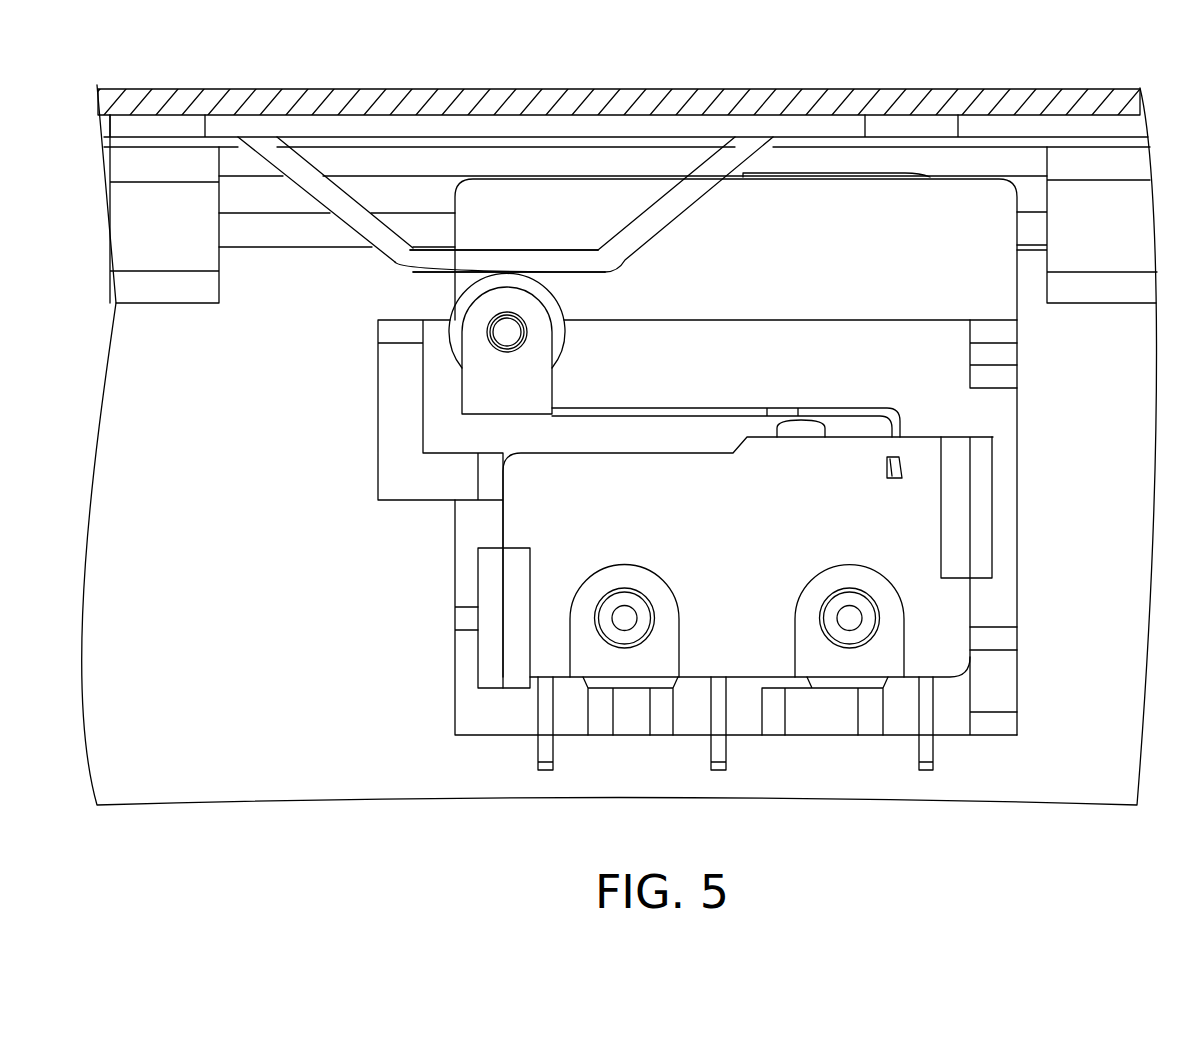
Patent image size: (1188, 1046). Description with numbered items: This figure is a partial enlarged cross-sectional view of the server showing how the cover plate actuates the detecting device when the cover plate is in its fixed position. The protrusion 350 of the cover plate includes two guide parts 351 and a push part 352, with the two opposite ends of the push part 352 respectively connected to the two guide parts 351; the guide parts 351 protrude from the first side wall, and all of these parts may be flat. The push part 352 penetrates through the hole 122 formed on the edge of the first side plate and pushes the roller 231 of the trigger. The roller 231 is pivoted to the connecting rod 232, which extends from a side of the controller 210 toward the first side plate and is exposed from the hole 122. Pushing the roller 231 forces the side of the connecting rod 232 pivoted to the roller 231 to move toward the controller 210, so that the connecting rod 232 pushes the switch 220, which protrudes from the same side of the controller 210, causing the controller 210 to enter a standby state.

The hole 122 is at (248, 282).
The controller 210 is at (940, 610).
The switch 220 is at (792, 428).
The roller 231 is at (552, 307).
The connecting rod 232 is at (727, 409).
The protrusion 350 is at (505, 141).
The guide parts 351 is at (345, 210).
The push part 352 is at (507, 161).